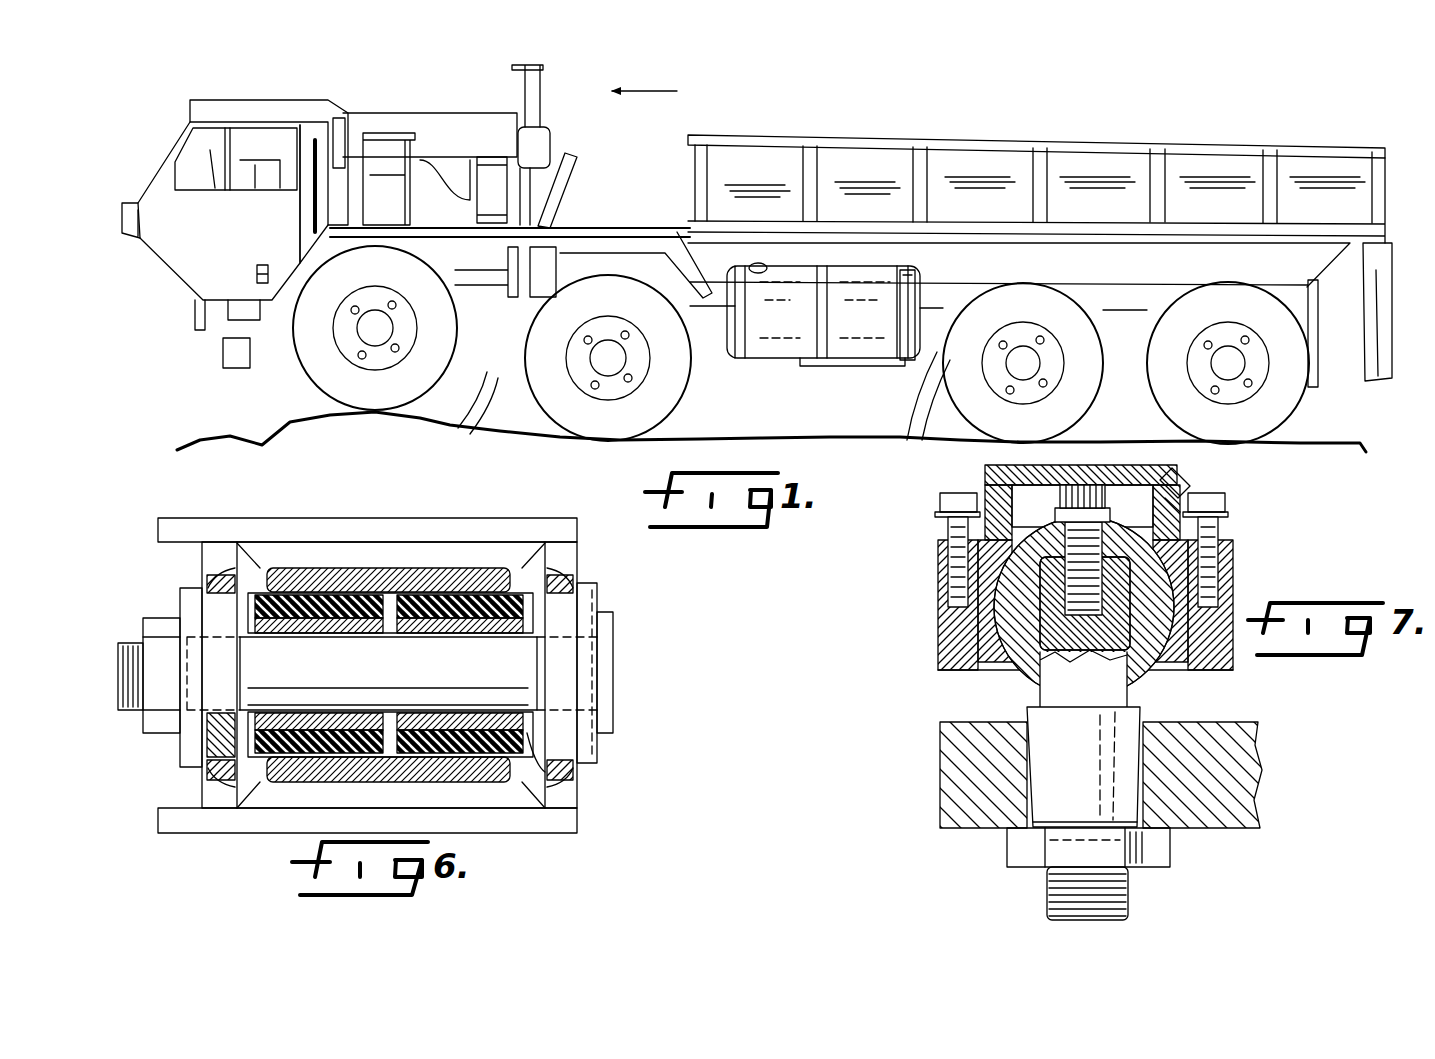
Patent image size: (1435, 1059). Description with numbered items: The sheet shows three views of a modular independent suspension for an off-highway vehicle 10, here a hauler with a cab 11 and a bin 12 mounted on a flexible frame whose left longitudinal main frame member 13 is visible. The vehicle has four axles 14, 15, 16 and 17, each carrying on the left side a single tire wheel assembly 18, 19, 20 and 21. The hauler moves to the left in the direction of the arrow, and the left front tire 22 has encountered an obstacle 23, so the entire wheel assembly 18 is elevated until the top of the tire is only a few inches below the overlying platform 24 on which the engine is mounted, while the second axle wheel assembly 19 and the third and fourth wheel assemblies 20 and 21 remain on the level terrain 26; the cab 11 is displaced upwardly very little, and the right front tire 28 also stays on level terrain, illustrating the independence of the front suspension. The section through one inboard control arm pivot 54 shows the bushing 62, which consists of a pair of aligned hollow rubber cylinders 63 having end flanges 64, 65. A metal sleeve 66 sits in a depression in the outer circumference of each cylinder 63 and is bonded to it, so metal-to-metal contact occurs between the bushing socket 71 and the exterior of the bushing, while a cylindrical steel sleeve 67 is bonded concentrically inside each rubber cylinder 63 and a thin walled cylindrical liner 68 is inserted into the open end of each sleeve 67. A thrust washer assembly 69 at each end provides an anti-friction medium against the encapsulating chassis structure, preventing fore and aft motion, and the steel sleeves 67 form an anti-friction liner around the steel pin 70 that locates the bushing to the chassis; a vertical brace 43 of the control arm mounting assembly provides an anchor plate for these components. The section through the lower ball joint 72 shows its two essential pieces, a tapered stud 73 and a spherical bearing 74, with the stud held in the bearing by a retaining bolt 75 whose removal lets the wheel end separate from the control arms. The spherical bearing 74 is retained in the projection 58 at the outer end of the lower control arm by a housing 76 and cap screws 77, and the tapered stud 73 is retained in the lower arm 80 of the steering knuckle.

In FIG. 1, the off-highway vehicle 10 is at (732, 92).
In FIG. 1, the cab 11 is at (250, 80).
In FIG. 1, the bin 12 is at (1178, 142).
In FIG. 1, the left longitudinal main frame member 13 is at (486, 300).
In FIG. 1, the first axle 14 is at (378, 292).
In FIG. 1, the second axle 15 is at (652, 374).
In FIG. 1, the third axle 16 is at (1064, 372).
In FIG. 1, the fourth axle 17 is at (1268, 382).
In FIG. 1, the wheel assembly 18 is at (306, 386).
In FIG. 1, the wheel assembly 19 is at (680, 416).
In FIG. 1, the wheel assembly 20 is at (942, 418).
In FIG. 1, the wheel assembly 21 is at (1300, 418).
In FIG. 1, the left front tire 22 is at (383, 398).
In FIG. 1, the obstacle 23 is at (292, 420).
In FIG. 1, the platform 24 is at (662, 230).
In FIG. 1, the level terrain 26 is at (828, 436).
In FIG. 1, the right front tire 28 is at (470, 404).
In FIG. 6, the vertical brace 43 is at (568, 553).
In FIG. 6, the control arm pivot 54 is at (452, 790).
In FIG. 7, the projection 58 is at (947, 636).
In FIG. 6, the bushing 62 is at (262, 566).
In FIG. 6, the hollow rubber cylinders 63 is at (390, 630).
In FIG. 6, the end flange 64 is at (216, 578).
In FIG. 6, the end flange 65 is at (549, 576).
In FIG. 6, the metal sleeve 66 is at (305, 590).
In FIG. 6, the cylindrical steel sleeve 67 is at (345, 630).
In FIG. 6, the thin walled cylindrical liner 68 is at (468, 628).
In FIG. 6, the thrust washer assembly 69 is at (548, 765).
In FIG. 6, the steel pin 70 is at (313, 676).
In FIG. 6, the bushing socket 71 is at (322, 783).
In FIG. 7, the lower ball joint 72 is at (1249, 681).
In FIG. 7, the tapered stud 73 is at (1127, 728).
In FIG. 7, the spherical bearing 74 is at (1018, 672).
In FIG. 7, the retaining bolt 75 is at (1106, 549).
In FIG. 7, the housing 76 is at (998, 478).
In FIG. 7, the cap screws 77 is at (1223, 525).
In FIG. 7, the lower arm 80 is at (1253, 768).